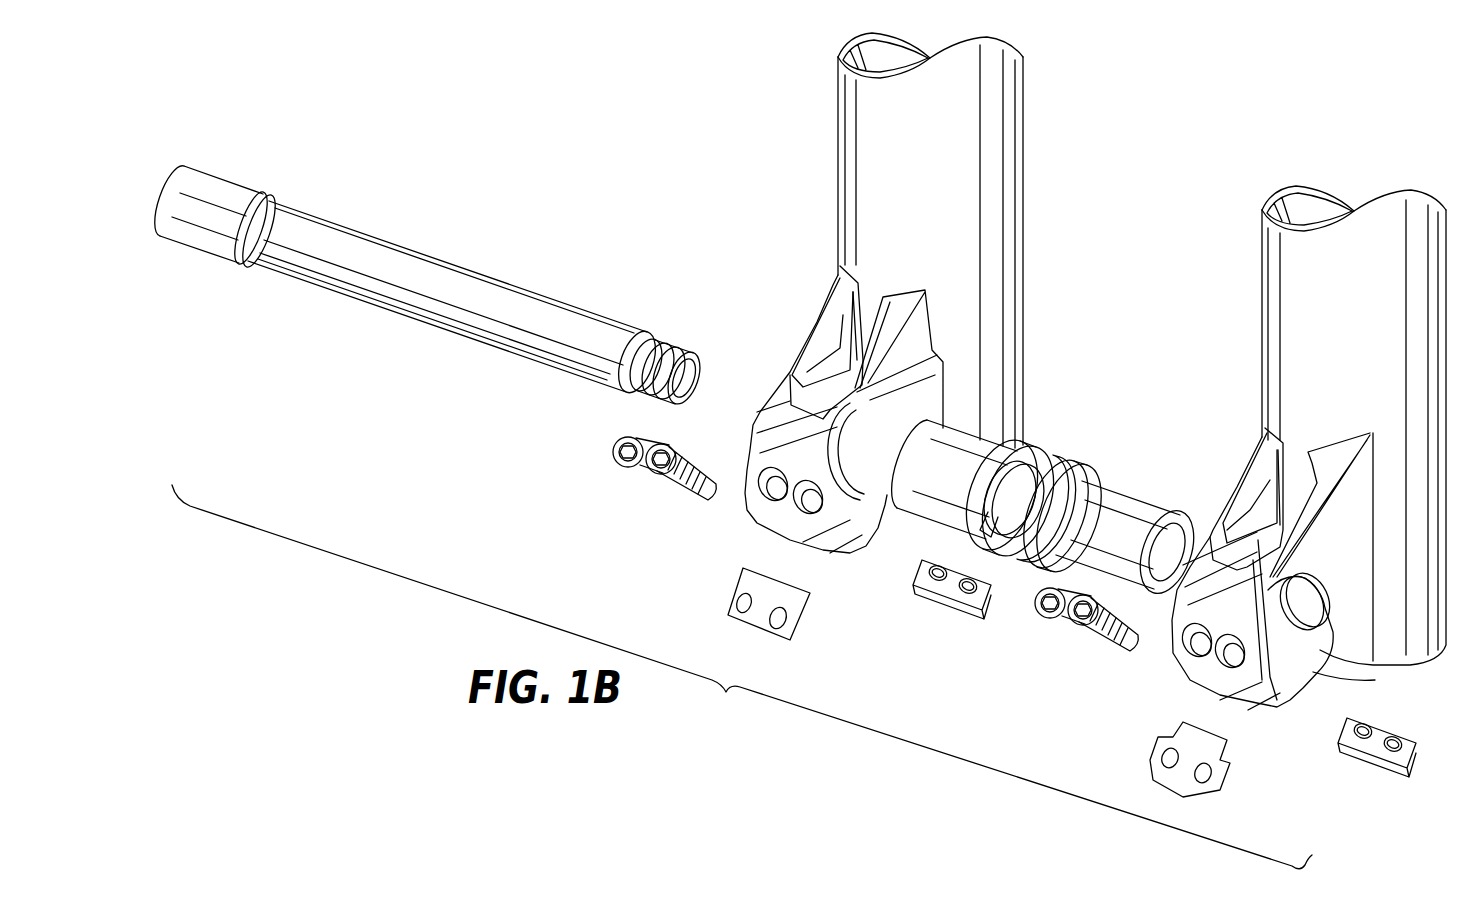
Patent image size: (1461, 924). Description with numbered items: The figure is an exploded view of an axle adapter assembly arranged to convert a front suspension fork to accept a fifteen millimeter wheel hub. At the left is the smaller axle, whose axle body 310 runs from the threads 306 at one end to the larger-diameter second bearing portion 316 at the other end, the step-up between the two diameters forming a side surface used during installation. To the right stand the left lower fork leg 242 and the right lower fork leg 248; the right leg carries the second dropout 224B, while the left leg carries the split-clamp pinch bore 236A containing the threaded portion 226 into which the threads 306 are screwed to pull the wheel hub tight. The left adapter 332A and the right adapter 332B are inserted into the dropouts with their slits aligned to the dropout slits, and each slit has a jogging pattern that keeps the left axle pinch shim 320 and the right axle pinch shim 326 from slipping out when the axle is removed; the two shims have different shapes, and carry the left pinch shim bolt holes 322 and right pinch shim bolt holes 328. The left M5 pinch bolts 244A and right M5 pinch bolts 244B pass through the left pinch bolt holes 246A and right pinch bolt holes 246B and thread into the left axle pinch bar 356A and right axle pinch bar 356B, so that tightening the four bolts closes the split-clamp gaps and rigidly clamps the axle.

The second bearing portion 316 is at (295, 152).
The axle body 310 is at (478, 274).
The threads 306 is at (687, 354).
The right lower fork leg 248 is at (838, 130).
The left lower fork leg 242 is at (1262, 284).
The threaded portion 226 is at (770, 392).
The second dropout 224B is at (872, 490).
The right adapter 332B is at (1031, 432).
The left adapter 332A is at (1156, 476).
The right M5 pinch bolts 244B is at (713, 490).
The left M5 pinch bolts 244A is at (1138, 643).
The right pinch bolt holes 246B is at (790, 500).
The left pinch bolt holes 246A is at (1205, 665).
The split-clamp pinch bore 236A is at (1315, 635).
The right axle pinch shim 326 is at (752, 616).
The right pinch shim bolt holes 328 is at (786, 622).
The left axle pinch shim 320 is at (1178, 783).
The left pinch shim bolt holes 322 is at (1210, 777).
The right axle pinch bar 356B is at (930, 600).
The left axle pinch bar 356A is at (1350, 770).